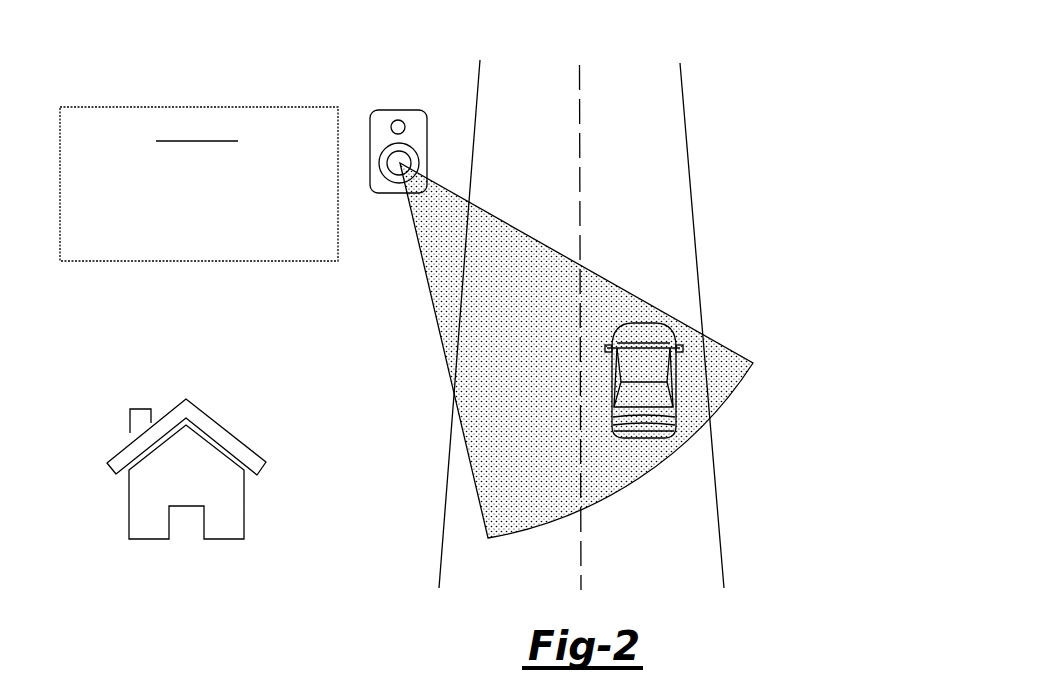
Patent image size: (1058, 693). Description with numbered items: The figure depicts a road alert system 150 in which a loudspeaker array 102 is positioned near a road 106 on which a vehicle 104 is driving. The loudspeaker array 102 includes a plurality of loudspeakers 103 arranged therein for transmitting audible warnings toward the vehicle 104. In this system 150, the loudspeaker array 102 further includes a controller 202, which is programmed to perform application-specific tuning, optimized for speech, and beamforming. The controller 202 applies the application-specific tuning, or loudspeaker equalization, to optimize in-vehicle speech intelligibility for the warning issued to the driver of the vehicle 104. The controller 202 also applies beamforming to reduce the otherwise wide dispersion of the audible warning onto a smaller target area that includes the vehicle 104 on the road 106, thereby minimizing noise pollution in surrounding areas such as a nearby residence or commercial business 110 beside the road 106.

The controller 202 is at (200, 107).
The loudspeaker array 102 is at (398, 110).
The loudspeakers 103 is at (463, 136).
The vehicle 104 is at (648, 440).
The road 106 is at (668, 138).
The residence and/or commercial business 110 is at (124, 448).
The road alert system 150 is at (823, 71).